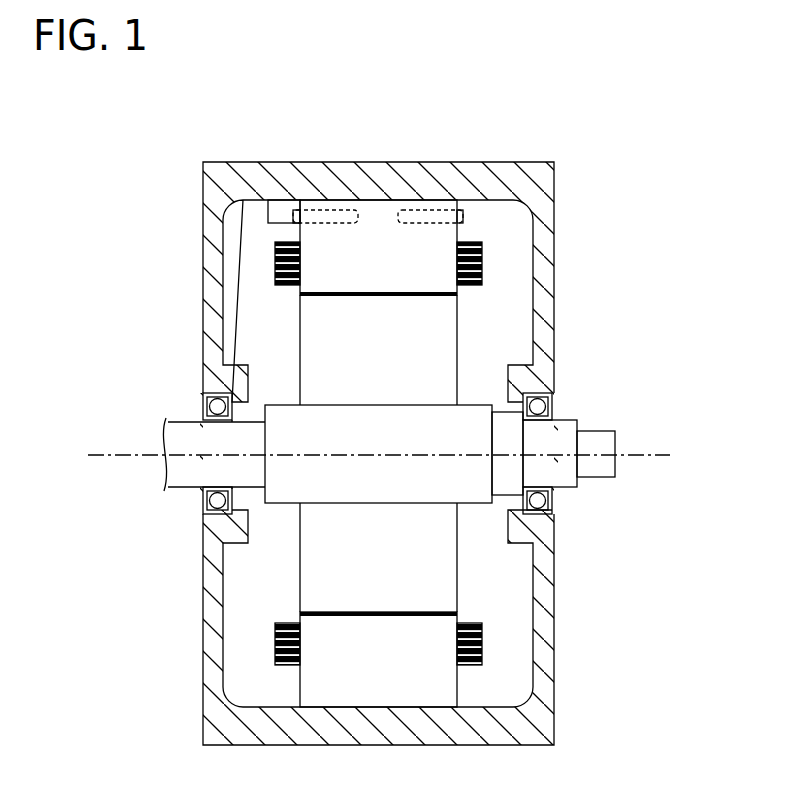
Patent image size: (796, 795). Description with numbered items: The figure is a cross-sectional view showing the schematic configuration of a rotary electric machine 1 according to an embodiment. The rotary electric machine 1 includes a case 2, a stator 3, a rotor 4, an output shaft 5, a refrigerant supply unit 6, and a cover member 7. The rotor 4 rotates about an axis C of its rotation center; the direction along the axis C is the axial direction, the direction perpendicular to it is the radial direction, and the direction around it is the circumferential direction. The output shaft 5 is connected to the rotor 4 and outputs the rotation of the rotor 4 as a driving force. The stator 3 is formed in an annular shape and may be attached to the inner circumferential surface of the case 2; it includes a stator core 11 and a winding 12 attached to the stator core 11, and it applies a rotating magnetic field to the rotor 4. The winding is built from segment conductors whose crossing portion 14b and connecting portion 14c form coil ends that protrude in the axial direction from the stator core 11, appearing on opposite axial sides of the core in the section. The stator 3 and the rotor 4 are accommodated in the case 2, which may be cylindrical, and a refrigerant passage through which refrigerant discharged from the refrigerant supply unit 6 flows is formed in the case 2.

The rotary electric machine 1 is at (586, 181).
The case 2 is at (189, 223).
The stator 3 is at (641, 208).
The rotor 4 is at (392, 555).
The output shaft 5 is at (190, 477).
The refrigerant supply unit 6 is at (331, 211).
The cover member 7 is at (278, 210).
The stator core 11 is at (418, 253).
The winding 12 is at (480, 266).
The crossing portion 14b is at (492, 278).
The connecting portion 14c is at (268, 265).
The axis C is at (115, 452).